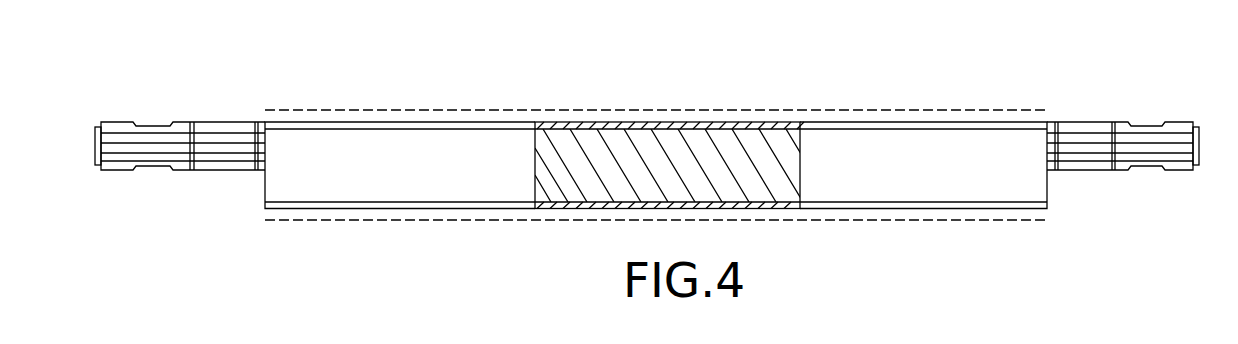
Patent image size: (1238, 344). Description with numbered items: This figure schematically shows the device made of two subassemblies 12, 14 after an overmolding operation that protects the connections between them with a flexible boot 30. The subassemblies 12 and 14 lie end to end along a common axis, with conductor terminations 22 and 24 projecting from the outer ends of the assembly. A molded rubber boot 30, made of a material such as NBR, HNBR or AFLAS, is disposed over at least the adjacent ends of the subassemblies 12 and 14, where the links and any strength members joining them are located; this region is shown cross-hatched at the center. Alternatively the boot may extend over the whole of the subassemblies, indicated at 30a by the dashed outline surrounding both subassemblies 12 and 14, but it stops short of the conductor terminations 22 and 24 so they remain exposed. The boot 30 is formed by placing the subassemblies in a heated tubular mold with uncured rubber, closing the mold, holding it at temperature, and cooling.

The subassembly 12 is at (388, 202).
The subassembly 14 is at (935, 203).
The conductor termination 22 is at (265, 188).
The conductor termination 24 is at (1047, 188).
The boot 30 is at (715, 122).
The boot over the whole of the subassemblies 30a is at (853, 118).